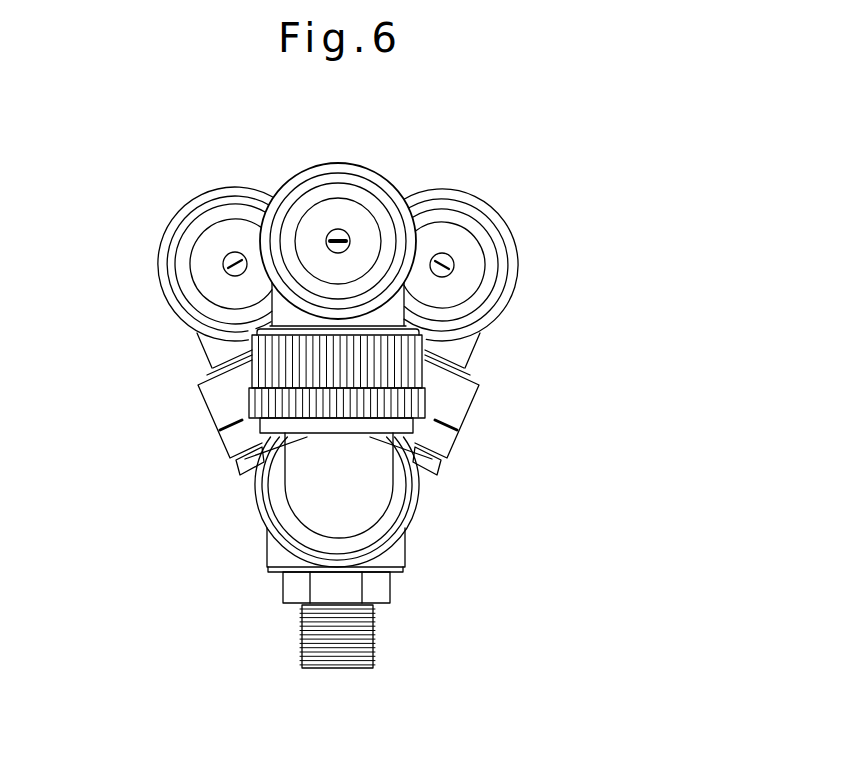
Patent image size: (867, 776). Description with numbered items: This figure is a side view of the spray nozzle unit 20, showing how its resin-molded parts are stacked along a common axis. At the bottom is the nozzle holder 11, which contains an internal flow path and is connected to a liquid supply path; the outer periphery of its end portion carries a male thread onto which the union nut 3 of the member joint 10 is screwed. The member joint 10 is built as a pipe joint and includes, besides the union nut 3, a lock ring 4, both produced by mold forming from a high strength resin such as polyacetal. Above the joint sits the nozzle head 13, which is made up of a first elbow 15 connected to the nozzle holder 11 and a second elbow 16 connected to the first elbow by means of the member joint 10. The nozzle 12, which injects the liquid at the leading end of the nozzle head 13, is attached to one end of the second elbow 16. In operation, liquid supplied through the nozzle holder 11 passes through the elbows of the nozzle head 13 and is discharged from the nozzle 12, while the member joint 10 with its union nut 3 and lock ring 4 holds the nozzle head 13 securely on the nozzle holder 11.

The spray nozzle unit 20 is at (367, 162).
The nozzle 12 is at (312, 225).
The second elbow 16 is at (395, 310).
The union nut 3 is at (278, 350).
The lock ring 4 is at (278, 400).
The member joint 10 is at (425, 358).
The nozzle head 13 is at (251, 474).
The first elbow 15 is at (312, 493).
The nozzle holder 11 is at (400, 550).